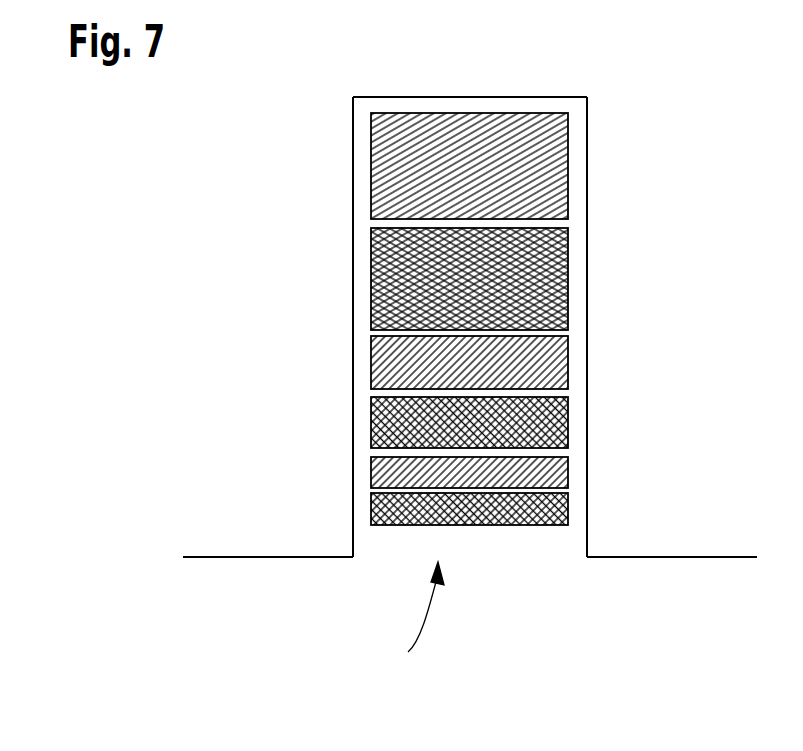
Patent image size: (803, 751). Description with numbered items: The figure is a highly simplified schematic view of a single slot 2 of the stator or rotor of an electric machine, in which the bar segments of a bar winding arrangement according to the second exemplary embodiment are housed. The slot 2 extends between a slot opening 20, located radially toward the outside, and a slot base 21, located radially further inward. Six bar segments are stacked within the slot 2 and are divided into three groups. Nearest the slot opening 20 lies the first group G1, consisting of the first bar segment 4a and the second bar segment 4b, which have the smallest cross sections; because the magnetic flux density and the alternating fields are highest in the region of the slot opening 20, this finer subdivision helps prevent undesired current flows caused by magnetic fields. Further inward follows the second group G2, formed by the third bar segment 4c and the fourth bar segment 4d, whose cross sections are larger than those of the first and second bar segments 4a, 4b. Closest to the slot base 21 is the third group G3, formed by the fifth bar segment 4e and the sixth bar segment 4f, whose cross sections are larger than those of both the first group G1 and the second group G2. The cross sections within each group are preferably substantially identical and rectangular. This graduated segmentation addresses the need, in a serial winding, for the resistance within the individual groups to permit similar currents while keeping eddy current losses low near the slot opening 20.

The slot 2 is at (587, 226).
The slot base 21 is at (486, 97).
The first bar segment 4a is at (533, 511).
The second bar segment 4b is at (533, 476).
The third bar segment 4c is at (533, 424).
The fourth bar segment 4d is at (533, 363).
The fifth bar segment 4e is at (535, 292).
The sixth bar segment 4f is at (535, 172).
The first group of bar segments G1 is at (486, 491).
The second group of bar segments G2 is at (486, 392).
The third group of bar segments G3 is at (486, 221).
The slot opening 20 is at (409, 617).